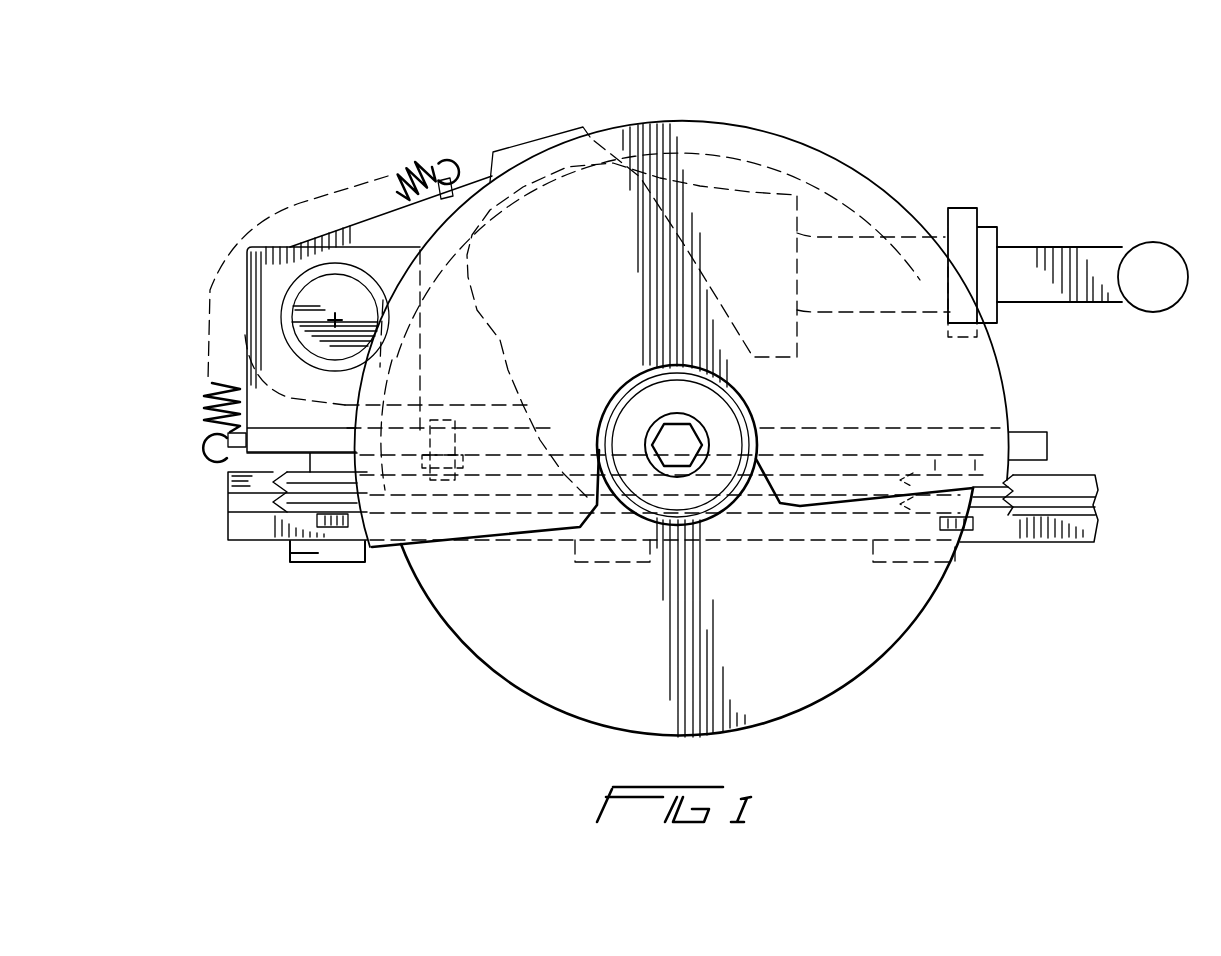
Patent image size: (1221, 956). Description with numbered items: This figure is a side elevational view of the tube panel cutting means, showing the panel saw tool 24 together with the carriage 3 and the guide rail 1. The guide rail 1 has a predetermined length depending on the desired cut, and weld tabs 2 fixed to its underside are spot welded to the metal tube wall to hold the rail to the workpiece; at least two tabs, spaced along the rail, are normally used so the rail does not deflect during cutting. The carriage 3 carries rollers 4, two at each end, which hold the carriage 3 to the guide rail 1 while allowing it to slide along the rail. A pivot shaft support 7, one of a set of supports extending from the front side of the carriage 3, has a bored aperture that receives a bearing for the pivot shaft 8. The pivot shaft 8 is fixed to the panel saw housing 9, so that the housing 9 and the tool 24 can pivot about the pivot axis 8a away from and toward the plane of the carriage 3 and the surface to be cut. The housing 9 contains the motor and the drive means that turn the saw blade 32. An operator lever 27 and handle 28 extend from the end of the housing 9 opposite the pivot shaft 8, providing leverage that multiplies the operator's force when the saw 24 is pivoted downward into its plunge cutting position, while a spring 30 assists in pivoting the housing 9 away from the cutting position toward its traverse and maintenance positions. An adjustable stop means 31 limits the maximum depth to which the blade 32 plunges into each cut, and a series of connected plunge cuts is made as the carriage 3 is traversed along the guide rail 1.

The guide rail 1 is at (225, 498).
The weld tabs 2 is at (305, 562).
The carriage 3 is at (227, 468).
The rollers 4 is at (290, 507).
The pivot shaft support 7 is at (248, 388).
The pivot shaft 8 is at (310, 296).
The pivot axis 8a is at (328, 319).
The panel saw housing 9 is at (382, 230).
The panel saw tool 24 is at (752, 122).
The operator lever 27 is at (942, 235).
The handle 28 is at (1140, 243).
The spring 30 is at (300, 202).
The adjustable stop means 31 is at (455, 420).
The saw blade 32 is at (832, 697).